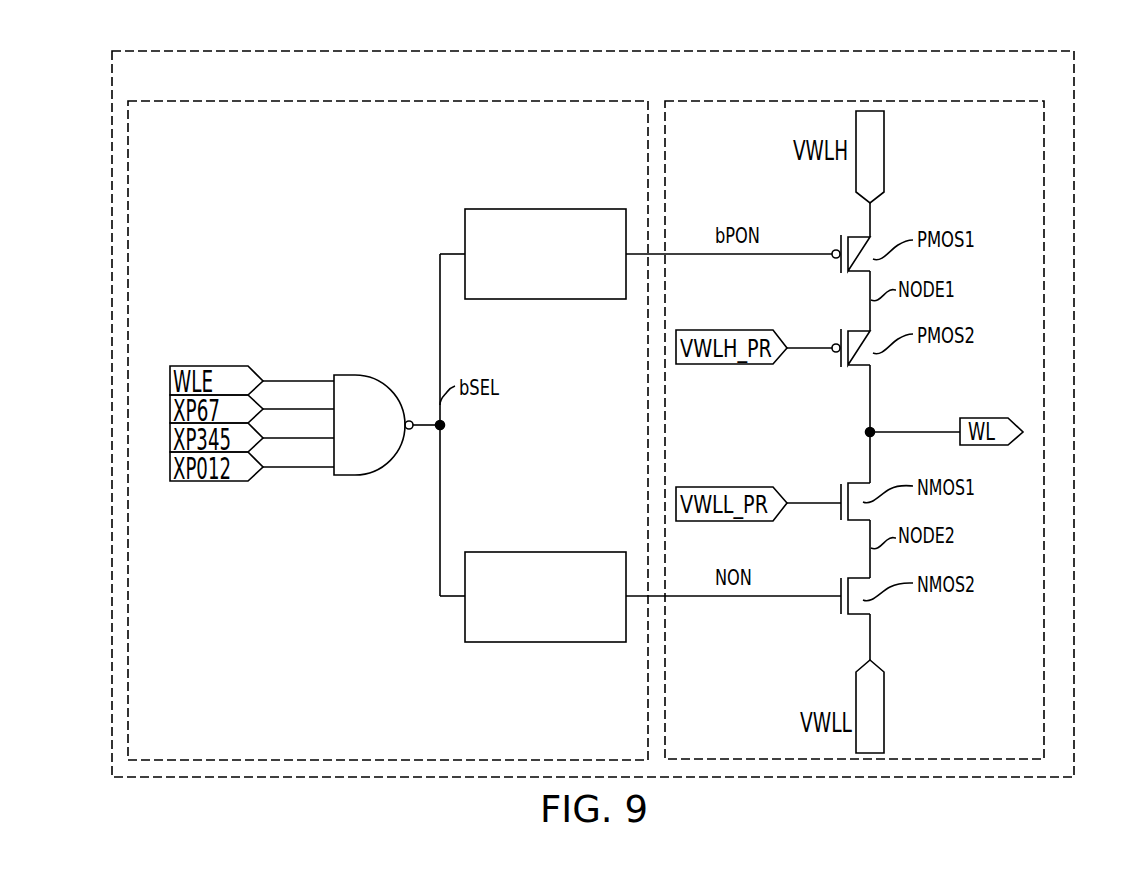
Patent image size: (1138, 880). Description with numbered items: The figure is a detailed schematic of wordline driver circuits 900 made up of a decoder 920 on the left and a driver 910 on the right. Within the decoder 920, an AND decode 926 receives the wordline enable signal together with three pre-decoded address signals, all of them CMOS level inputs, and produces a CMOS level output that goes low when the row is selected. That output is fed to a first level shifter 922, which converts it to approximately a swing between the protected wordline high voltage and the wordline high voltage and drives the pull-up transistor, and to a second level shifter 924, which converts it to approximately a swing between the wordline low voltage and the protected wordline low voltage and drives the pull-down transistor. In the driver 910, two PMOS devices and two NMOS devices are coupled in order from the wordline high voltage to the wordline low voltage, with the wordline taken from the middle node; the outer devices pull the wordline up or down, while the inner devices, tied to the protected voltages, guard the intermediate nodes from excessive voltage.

The wordline driver circuits 900 is at (1074, 101).
The driver 910 is at (782, 101).
The decoder 920 is at (423, 101).
The first level shifter 922 is at (531, 268).
The second level shifter 924 is at (531, 610).
The AND decode 926 is at (357, 380).